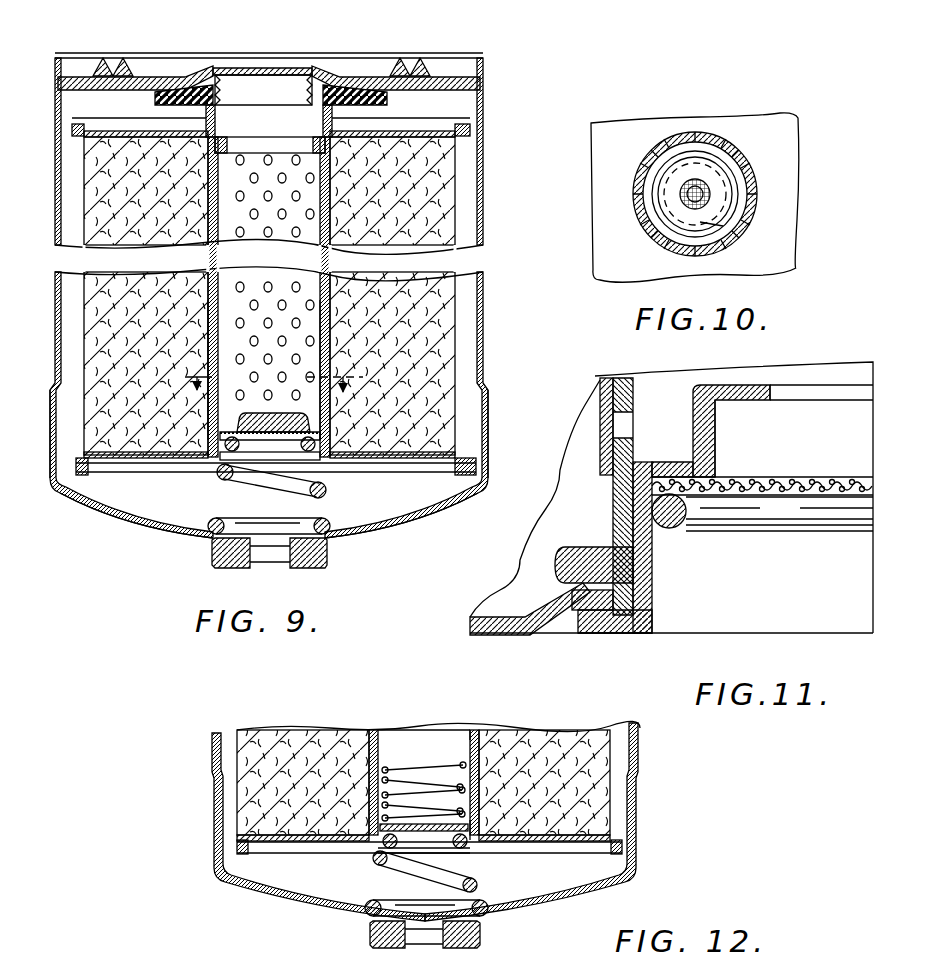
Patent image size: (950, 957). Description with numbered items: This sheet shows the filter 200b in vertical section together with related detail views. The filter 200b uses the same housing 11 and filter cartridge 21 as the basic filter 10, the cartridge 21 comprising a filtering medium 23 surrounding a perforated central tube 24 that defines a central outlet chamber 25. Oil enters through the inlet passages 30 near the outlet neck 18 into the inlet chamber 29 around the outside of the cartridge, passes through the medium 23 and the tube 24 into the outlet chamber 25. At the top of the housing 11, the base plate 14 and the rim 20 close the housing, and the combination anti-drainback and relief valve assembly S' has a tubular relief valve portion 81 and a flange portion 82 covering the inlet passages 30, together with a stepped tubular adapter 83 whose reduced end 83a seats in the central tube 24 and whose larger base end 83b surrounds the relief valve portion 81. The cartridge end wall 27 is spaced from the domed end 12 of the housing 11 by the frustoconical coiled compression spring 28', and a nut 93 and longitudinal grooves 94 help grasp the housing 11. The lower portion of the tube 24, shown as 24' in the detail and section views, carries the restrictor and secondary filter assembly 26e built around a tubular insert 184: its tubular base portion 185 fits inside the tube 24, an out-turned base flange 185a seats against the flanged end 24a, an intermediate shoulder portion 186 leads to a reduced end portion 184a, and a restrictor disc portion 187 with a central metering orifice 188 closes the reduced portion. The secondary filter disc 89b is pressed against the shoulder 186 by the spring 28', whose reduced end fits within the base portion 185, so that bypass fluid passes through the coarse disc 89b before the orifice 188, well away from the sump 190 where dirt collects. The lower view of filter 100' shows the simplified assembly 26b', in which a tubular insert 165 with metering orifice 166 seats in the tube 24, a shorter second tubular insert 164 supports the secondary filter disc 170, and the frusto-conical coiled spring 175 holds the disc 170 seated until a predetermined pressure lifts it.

In FIG. 9, the filter 10 is at (270, 389).
In FIG. 9, the housing 11 is at (487, 210).
In FIG. 12, the housing 11 is at (212, 745).
In FIG. 9, the domed end 12 is at (142, 526).
In FIG. 12, the domed end 12 is at (296, 903).
In FIG. 9, the cover plate 14 is at (150, 68).
In FIG. 9, the outlet neck 18 is at (224, 88).
In FIG. 9, the crimped rim 20 is at (416, 60).
In FIG. 9, the filter cartridge 21 is at (489, 170).
In FIG. 12, the filter cartridge 21 is at (614, 750).
In FIG. 9, the filtering medium 23 is at (448, 372).
In FIG. 12, the filtering medium 23 is at (256, 778).
In FIG. 9, the perforated central tube 24 is at (269, 296).
In FIG. 10, the perforated central tube 24 is at (745, 193).
In FIG. 11, the perforated central tube 24 is at (636, 482).
In FIG. 12, the perforated central tube 24 is at (424, 782).
In FIG. 9, the lower portion of central tube 24' is at (287, 345).
In FIG. 10, the lower portion of central tube 24' is at (732, 186).
In FIG. 11, the lower portion of central tube 24' is at (580, 426).
In FIG. 11, the out-turned flanged end of the central tube 24a is at (578, 588).
In FIG. 9, the central outlet chamber 25 is at (281, 326).
In FIG. 12, the central outlet chamber 25 is at (420, 735).
In FIG. 9, the restrictor and secondary filter assembly 26e is at (322, 468).
In FIG. 11, the restrictor and secondary filter assembly 26e is at (622, 642).
In FIG. 12, the fluid restrictor and secondary filter assembly 26b' is at (429, 868).
In FIG. 9, the end wall 27 is at (142, 462).
In FIG. 10, the end wall 27 is at (780, 255).
In FIG. 11, the end wall 27 is at (495, 635).
In FIG. 9, the coiled compression spring 28' is at (287, 520).
In FIG. 11, the coiled compression spring 28' is at (762, 527).
In FIG. 12, the coiled compression spring 28' is at (449, 897).
In FIG. 9, the inlet chamber 29 is at (60, 94).
In FIG. 9, the inlet passages 30 is at (356, 66).
In FIG. 9, the tubular relief valve portion 81 is at (220, 98).
In FIG. 9, the flange portion 82 is at (385, 101).
In FIG. 9, the stepped tubular adapter 83 is at (345, 115).
In FIG. 9, the reduced end 83a is at (232, 148).
In FIG. 9, the base end 83b is at (215, 124).
In FIG. 9, the secondary filter disc 89b is at (233, 478).
In FIG. 10, the secondary filter disc 89b is at (700, 186).
In FIG. 11, the secondary filter disc 89b is at (795, 478).
In FIG. 9, the nut 93 is at (330, 556).
In FIG. 12, the nut 93 is at (481, 939).
In FIG. 9, the longitudinal grooves 94 is at (486, 422).
In FIG. 12, the filter 100' is at (678, 793).
In FIG. 12, the second tubular insert 164 is at (380, 842).
In FIG. 12, the tubular insert 165 is at (480, 733).
In FIG. 12, the metering orifice 166 is at (421, 768).
In FIG. 12, the secondary filter disc 170 is at (432, 834).
In FIG. 12, the frusto-conical coiled spring 175 is at (480, 812).
In FIG. 11, the tubular insert 184 is at (652, 608).
In FIG. 11, the reduced end portion 184a is at (718, 432).
In FIG. 11, the tubular base portion 185 is at (652, 577).
In FIG. 11, the out-turned base flange 185a is at (640, 635).
In FIG. 10, the intermediate shoulder portion 186 is at (723, 226).
In FIG. 11, the intermediate shoulder portion 186 is at (692, 468).
In FIG. 9, the restrictor disc portion 187 is at (306, 422).
In FIG. 10, the restrictor disc portion 187 is at (722, 212).
In FIG. 11, the restrictor disc portion 187 is at (728, 388).
In FIG. 9, the metering orifice 188 is at (258, 420).
In FIG. 10, the metering orifice 188 is at (688, 190).
In FIG. 11, the metering orifice 188 is at (812, 392).
In FIG. 9, the sump 190 is at (262, 510).
In FIG. 12, the sump 190 is at (418, 896).
In FIG. 9, the filter 200b is at (490, 100).
In FIG. 9, the combination anti-drainback and relief valve assembly S' is at (129, 102).